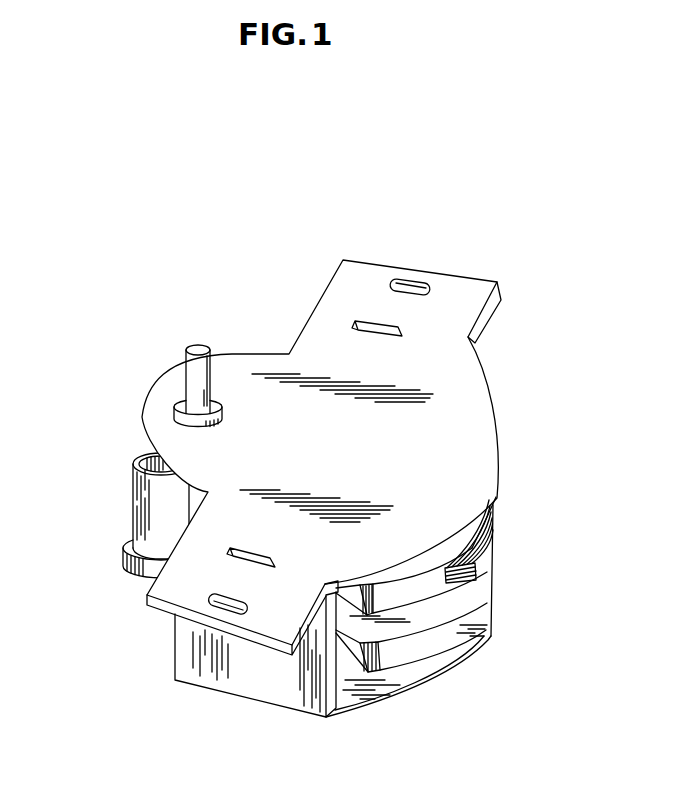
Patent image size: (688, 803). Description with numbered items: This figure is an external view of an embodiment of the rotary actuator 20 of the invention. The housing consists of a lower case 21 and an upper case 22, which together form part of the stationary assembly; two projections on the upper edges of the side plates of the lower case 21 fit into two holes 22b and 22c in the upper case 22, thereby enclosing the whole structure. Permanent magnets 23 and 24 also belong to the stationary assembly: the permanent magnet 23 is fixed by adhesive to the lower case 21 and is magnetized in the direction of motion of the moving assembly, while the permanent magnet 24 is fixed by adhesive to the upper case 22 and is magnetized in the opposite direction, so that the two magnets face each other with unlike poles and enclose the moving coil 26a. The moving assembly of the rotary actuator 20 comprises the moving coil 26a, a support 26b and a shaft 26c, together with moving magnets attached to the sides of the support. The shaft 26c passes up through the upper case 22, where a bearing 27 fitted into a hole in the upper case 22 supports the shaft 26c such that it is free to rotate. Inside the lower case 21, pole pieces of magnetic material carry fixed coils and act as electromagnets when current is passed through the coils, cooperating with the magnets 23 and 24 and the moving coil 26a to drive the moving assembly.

The rotary actuator 20 is at (506, 264).
The lower case 21 is at (315, 703).
The upper case 22 is at (478, 441).
The hole 22b is at (228, 550).
The hole 22c is at (368, 327).
The permanent magnet 23 is at (397, 654).
The permanent magnet 24 is at (403, 592).
The moving coil 26a is at (498, 536).
The support 26b is at (132, 511).
The shaft 26c is at (200, 351).
The bearing 27 is at (176, 404).